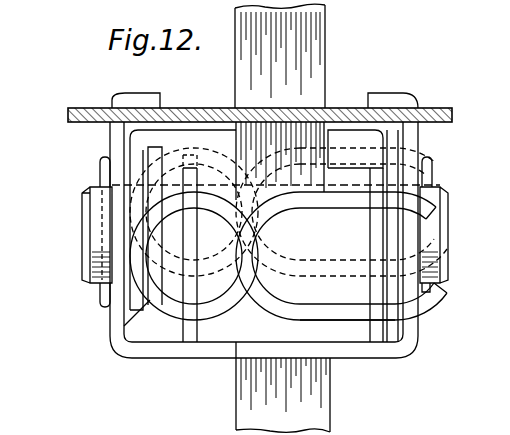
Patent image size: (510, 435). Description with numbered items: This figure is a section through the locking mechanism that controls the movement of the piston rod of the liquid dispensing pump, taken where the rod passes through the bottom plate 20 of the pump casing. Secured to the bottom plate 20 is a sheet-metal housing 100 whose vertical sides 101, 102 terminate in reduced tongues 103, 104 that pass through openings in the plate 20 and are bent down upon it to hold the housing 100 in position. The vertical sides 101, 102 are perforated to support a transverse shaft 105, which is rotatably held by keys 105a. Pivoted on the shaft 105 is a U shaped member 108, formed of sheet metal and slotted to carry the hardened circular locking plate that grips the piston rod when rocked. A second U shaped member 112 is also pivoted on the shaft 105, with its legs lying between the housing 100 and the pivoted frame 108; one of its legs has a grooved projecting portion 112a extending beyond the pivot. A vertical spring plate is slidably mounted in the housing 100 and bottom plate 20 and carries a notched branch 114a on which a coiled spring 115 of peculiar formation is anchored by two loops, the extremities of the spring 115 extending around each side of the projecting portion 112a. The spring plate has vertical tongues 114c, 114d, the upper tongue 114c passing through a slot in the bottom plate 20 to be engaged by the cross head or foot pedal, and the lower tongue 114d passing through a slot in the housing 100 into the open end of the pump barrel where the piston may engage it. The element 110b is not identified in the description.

The bottom plate 20 is at (80, 108).
The housing 100 is at (217, 350).
The vertical side 101 is at (118, 135).
The vertical side 102 is at (402, 133).
The tongue 103 is at (134, 97).
The tongue 104 is at (390, 100).
The transverse shaft 105 is at (88, 201).
The keys 105a is at (103, 290).
The U shaped member 108 is at (143, 147).
The post 110b is at (374, 228).
The U shaped member 112 is at (137, 302).
The projecting portion 112a is at (385, 253).
The branch 114a is at (160, 314).
The vertical tongue 114c is at (322, 33).
The vertical tongue 114d is at (316, 395).
The coiled spring 115 is at (337, 315).